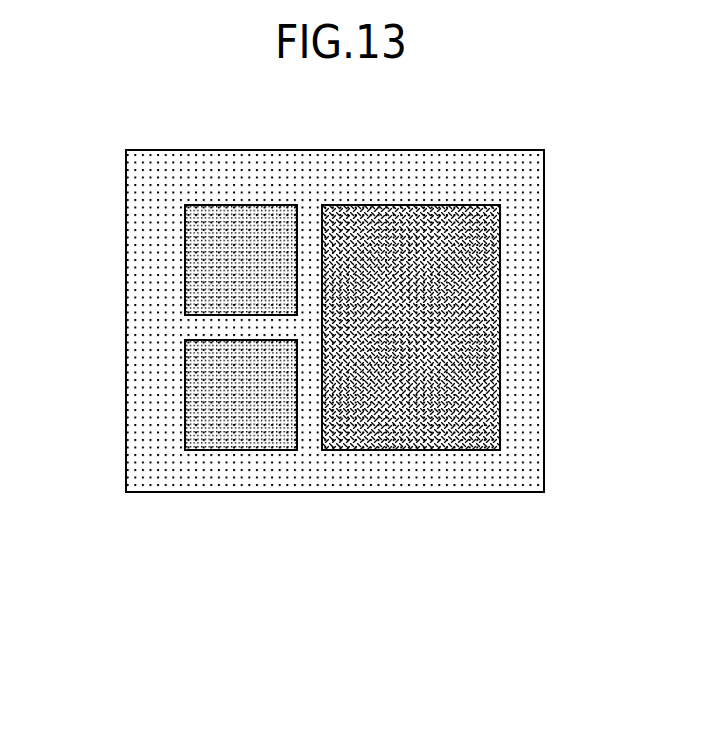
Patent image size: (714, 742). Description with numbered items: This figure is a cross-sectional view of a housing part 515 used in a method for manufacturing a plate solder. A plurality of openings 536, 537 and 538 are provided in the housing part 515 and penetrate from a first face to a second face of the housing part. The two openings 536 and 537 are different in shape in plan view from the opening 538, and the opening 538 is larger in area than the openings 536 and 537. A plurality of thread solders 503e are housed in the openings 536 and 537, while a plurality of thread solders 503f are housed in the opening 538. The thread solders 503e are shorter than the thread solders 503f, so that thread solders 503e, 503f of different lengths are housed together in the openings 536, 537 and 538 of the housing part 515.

The housing part 515 is at (145, 183).
The opening 536 is at (195, 205).
The opening 537 is at (240, 450).
The opening 538 is at (500, 353).
The thread solders 503e is at (163, 334).
The thread solders 503f is at (469, 273).